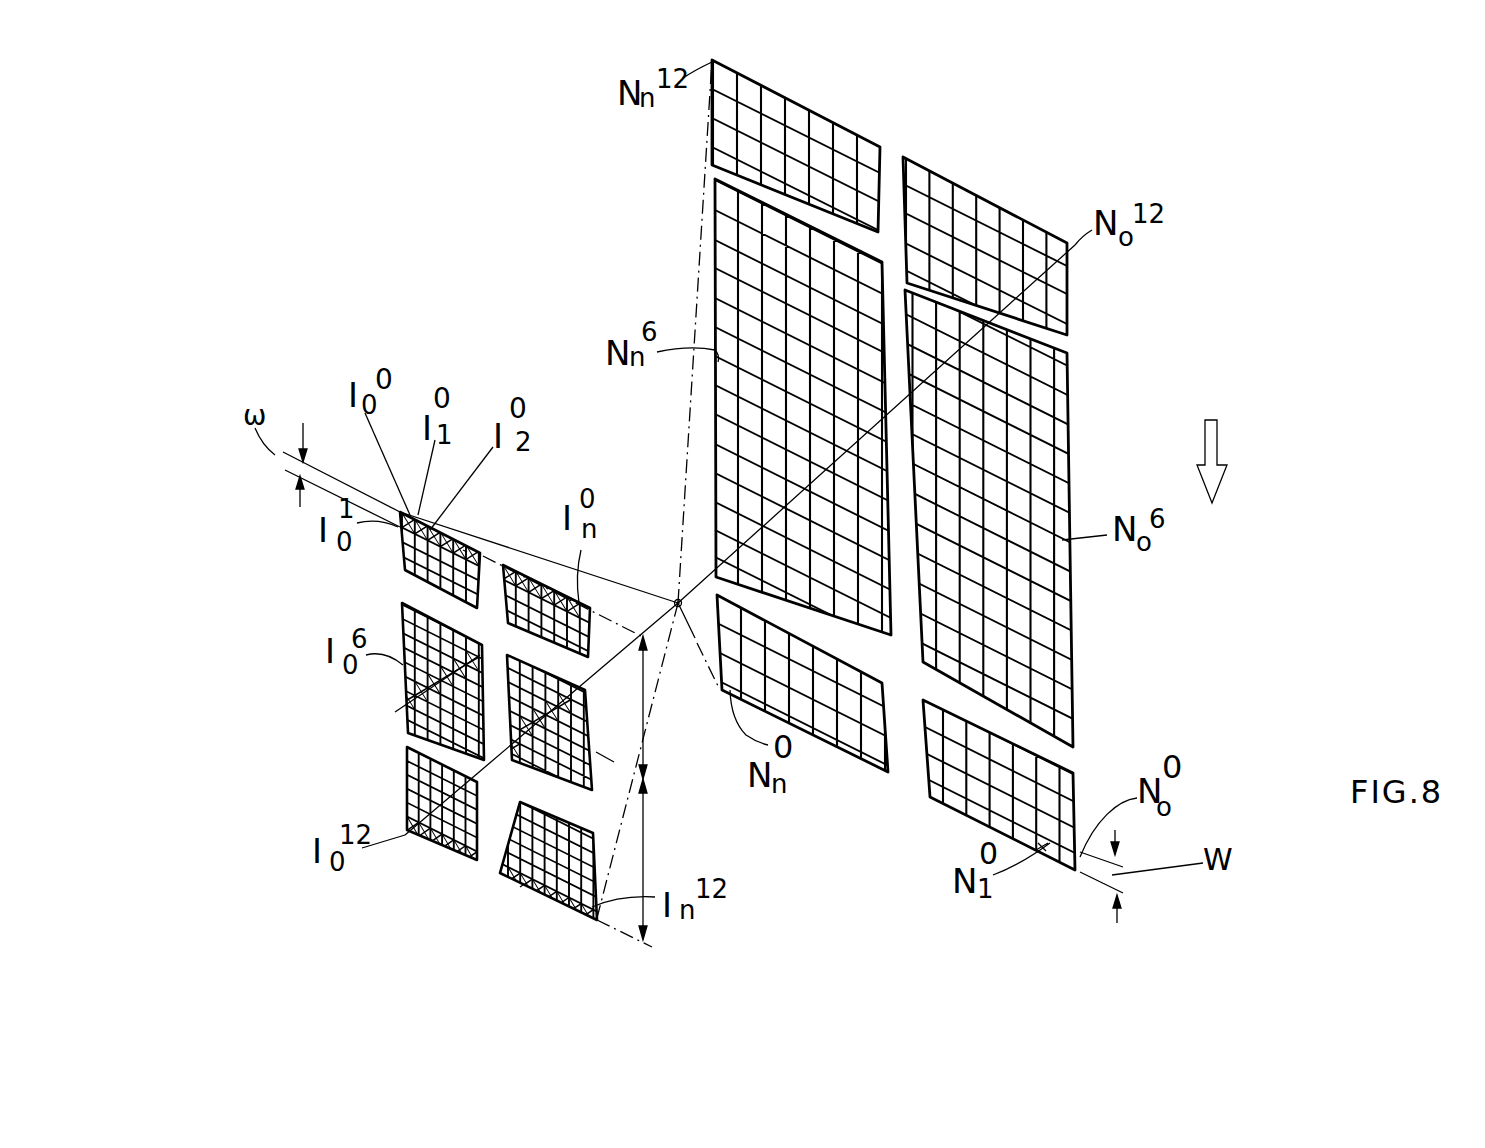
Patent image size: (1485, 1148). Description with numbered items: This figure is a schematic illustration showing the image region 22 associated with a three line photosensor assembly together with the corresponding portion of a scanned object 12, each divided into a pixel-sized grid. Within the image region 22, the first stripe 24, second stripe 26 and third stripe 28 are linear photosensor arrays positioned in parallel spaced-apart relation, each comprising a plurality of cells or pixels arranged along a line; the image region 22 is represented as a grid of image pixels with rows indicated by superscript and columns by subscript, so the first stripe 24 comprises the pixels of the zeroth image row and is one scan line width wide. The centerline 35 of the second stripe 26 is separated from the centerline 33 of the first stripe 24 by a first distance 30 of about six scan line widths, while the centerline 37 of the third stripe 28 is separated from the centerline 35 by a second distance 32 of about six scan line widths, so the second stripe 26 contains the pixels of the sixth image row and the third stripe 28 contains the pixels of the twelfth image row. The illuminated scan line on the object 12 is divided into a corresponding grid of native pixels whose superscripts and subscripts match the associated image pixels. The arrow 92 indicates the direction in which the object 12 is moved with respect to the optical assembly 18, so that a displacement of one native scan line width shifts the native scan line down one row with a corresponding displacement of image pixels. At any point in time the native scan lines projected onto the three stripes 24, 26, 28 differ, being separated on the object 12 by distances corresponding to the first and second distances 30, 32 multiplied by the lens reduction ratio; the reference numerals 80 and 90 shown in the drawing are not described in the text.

The object 12 is at (968, 500).
The optical assembly 18 is at (677, 600).
The image region 22 is at (398, 725).
The first stripe 24 is at (463, 550).
The second stripe 26 is at (395, 712).
The third stripe 28 is at (520, 887).
The first distance 30 is at (644, 695).
The second distance 32 is at (645, 818).
The centerline of the first stripe 33 is at (616, 617).
The centerline of the second stripe 35 is at (604, 752).
The centerline of the third stripe 37 is at (606, 930).
The input pattern 80 is at (328, 601).
The mesh panel 90 is at (1118, 388).
The arrow 92 is at (1222, 437).